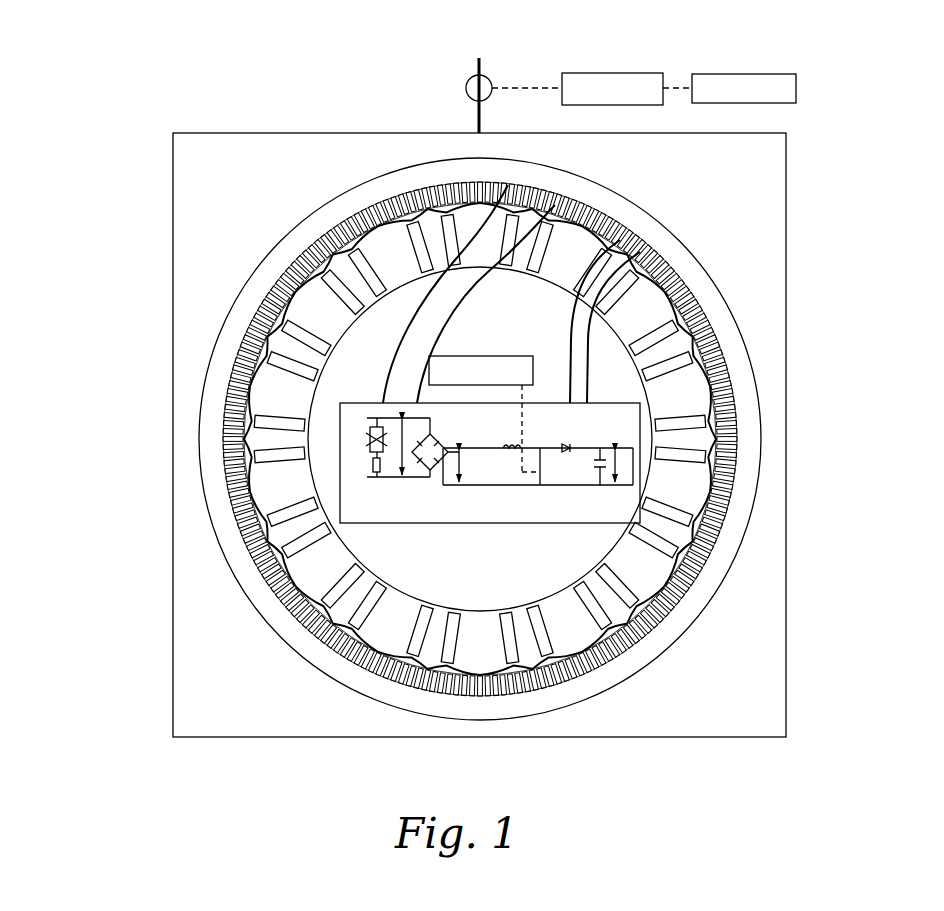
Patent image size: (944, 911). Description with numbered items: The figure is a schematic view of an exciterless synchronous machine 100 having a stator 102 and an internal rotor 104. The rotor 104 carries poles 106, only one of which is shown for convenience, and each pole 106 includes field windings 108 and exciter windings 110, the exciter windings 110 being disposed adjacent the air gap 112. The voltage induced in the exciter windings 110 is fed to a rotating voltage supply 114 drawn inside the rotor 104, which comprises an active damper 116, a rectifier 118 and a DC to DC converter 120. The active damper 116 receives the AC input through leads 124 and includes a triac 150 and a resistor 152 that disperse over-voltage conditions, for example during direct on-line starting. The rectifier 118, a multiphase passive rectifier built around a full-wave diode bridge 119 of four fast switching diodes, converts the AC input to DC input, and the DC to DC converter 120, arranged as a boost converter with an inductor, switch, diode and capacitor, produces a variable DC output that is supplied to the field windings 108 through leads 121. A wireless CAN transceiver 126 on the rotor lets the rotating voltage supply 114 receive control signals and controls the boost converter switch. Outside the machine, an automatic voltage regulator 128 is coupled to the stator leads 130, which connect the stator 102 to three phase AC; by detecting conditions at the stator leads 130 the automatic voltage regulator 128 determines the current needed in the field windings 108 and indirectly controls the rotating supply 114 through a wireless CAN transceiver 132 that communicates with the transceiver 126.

The exciterless synchronous machine 100 is at (120, 657).
The stator 102 is at (305, 235).
The rotor 104 is at (663, 597).
The poles 106 is at (385, 252).
The field windings 108 is at (300, 300).
The exciter windings 110 is at (713, 333).
The air gap 112 is at (480, 190).
The rotating voltage supply 114 is at (487, 540).
The active damper 116 is at (355, 495).
The rectifier 118 is at (437, 493).
The full-wave diode bridge 119 is at (445, 420).
The DC to DC converter 120 is at (552, 493).
The leads 121 is at (560, 313).
The leads 124 is at (438, 285).
The wireless CAN transceiver 126 is at (490, 356).
The automatic voltage regulator 128 is at (595, 73).
The stator leads 130 is at (478, 118).
The wireless CAN transceiver 132 is at (785, 74).
The triac 150 is at (371, 426).
The resistor 152 is at (368, 462).